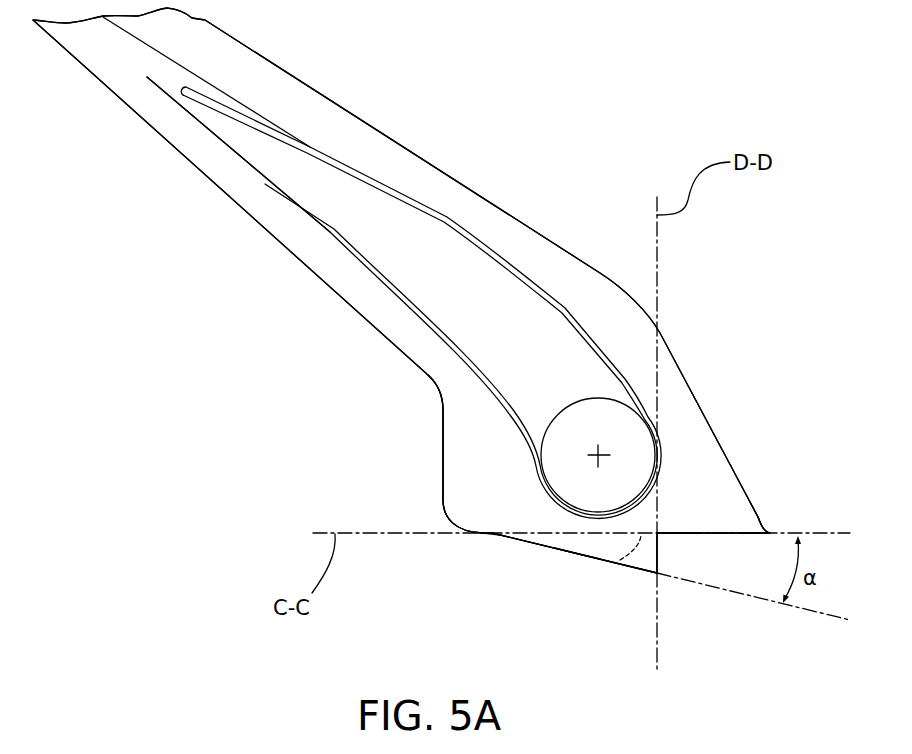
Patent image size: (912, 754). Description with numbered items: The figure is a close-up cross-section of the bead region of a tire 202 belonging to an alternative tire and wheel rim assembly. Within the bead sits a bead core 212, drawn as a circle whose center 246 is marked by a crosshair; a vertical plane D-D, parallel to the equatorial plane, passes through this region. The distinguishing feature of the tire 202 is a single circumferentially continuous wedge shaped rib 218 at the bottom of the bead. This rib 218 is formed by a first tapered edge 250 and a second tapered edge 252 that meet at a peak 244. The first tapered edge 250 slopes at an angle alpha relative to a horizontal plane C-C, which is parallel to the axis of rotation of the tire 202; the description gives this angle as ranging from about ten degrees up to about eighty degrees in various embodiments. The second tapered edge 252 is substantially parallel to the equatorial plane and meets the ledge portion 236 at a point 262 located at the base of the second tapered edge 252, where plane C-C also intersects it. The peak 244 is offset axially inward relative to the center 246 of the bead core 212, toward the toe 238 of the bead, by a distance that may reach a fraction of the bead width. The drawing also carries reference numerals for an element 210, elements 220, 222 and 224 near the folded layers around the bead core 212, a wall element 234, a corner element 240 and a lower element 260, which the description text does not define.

The tire 202 is at (350, 368).
The blade body 210 is at (543, 192).
The bead core 212 is at (603, 422).
The single circumferentially continuous wedge shaped rib 218 is at (615, 558).
The sheet 220 is at (262, 180).
The folded edge 222 is at (168, 89).
The sheath 224 is at (551, 342).
The side wall 234 is at (472, 460).
The ledge portion 236 is at (563, 520).
The toe 238 is at (765, 531).
The front corner 240 is at (468, 517).
The peak 244 is at (657, 573).
The center 246 is at (603, 448).
The first tapered edge 250 is at (587, 555).
The second tapered edge 252 is at (657, 549).
The front bottom edge 260 is at (510, 534).
The point 262 is at (660, 533).